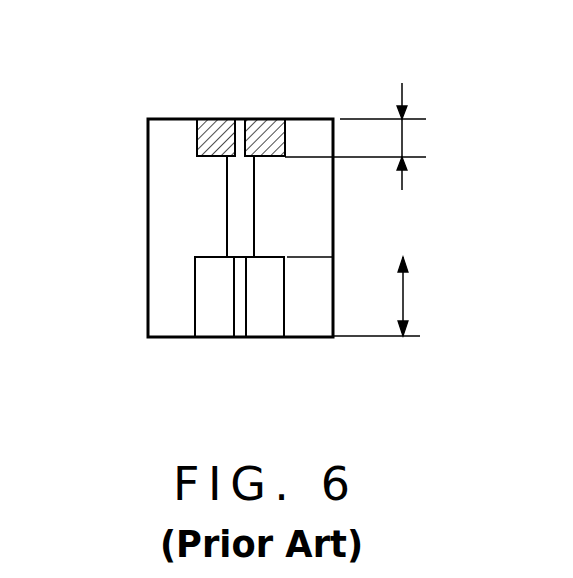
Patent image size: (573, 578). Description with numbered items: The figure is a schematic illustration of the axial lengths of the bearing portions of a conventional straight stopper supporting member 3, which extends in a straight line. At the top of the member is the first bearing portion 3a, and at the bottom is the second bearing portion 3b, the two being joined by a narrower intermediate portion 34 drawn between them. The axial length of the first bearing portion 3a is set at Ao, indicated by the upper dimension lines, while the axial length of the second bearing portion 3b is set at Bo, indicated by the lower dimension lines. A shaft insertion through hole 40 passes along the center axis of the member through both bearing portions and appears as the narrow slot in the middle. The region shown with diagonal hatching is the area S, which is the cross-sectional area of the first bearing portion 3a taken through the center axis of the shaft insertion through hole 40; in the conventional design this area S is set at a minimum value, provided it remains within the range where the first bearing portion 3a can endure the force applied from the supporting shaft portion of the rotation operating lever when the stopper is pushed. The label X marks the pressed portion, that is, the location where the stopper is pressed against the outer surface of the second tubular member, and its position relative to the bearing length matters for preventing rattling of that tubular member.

The stopper supporting member 3 is at (144, 337).
The first bearing portion 3a is at (197, 138).
The shaft insertion through hole 40 is at (238, 157).
The stem portion 34 is at (228, 209).
The second bearing portion 3b is at (195, 295).
The area S is at (226, 119).
The pressed portion X is at (255, 178).
The axial length of first bearing portion Ao is at (400, 136).
The axial length of second bearing portion Bo is at (395, 296).